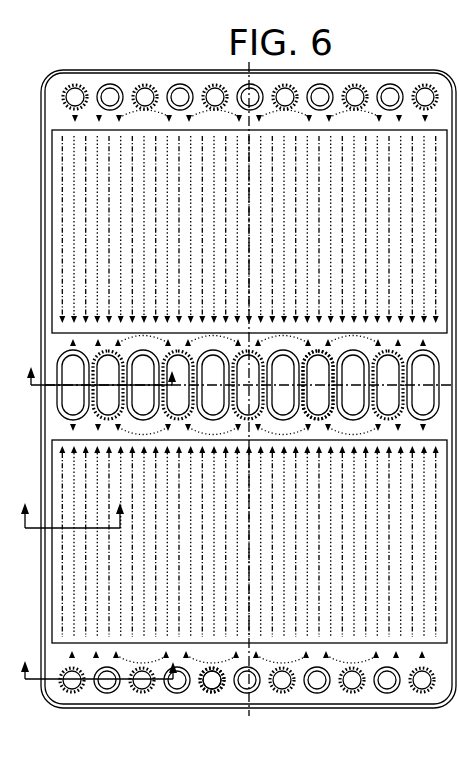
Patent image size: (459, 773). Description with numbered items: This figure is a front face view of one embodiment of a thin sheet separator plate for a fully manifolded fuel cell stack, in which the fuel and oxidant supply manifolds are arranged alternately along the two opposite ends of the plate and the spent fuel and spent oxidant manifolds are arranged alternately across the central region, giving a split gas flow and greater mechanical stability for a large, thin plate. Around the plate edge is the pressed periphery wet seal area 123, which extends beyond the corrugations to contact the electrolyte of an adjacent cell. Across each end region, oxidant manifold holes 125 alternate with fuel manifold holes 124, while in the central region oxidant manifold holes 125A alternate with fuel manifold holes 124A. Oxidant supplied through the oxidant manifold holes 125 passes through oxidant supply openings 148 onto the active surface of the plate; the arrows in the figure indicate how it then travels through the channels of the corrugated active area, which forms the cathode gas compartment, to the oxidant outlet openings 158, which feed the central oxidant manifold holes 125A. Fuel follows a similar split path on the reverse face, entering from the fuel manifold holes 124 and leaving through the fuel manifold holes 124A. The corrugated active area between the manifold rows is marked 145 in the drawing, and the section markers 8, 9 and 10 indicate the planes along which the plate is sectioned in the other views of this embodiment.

The periphery wet seal area 123 is at (100, 707).
The fuel manifold holes 124 is at (110, 93).
The oxidant manifold holes 125 is at (76, 90).
The fuel manifold holes 124A is at (215, 402).
The oxidant manifold holes 125A is at (317, 403).
The plate land area 145 is at (232, 410).
The oxidant supply openings 148 is at (211, 667).
The oxidant outlet openings 158 is at (312, 418).
The section line 8- 8 is at (101, 659).
The section line 9- 9 is at (72, 505).
The section line 10- 10 is at (102, 366).